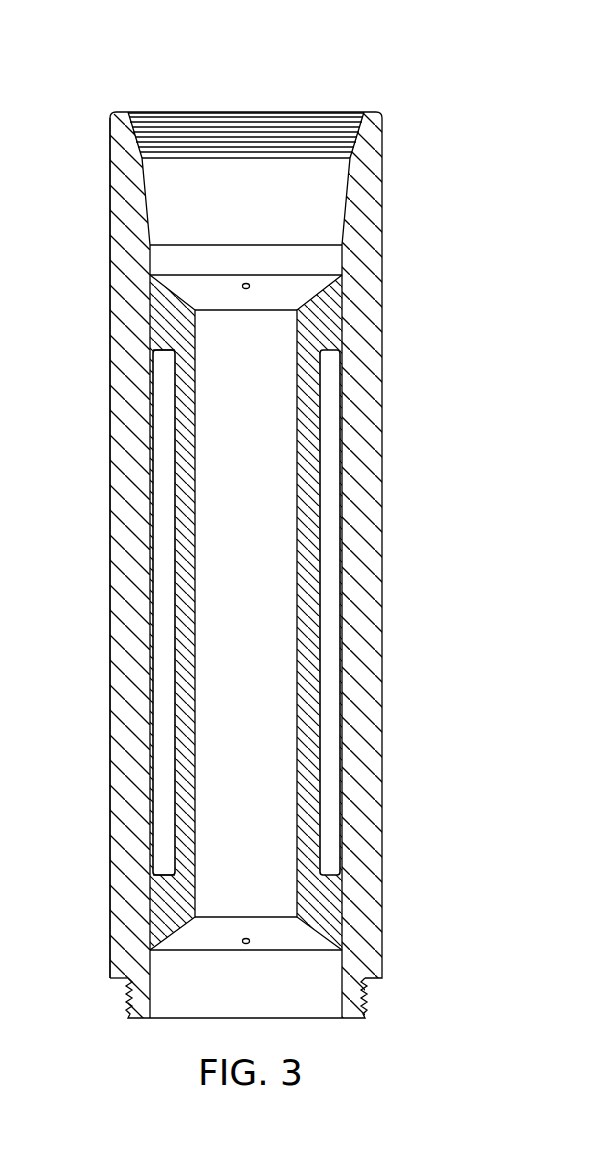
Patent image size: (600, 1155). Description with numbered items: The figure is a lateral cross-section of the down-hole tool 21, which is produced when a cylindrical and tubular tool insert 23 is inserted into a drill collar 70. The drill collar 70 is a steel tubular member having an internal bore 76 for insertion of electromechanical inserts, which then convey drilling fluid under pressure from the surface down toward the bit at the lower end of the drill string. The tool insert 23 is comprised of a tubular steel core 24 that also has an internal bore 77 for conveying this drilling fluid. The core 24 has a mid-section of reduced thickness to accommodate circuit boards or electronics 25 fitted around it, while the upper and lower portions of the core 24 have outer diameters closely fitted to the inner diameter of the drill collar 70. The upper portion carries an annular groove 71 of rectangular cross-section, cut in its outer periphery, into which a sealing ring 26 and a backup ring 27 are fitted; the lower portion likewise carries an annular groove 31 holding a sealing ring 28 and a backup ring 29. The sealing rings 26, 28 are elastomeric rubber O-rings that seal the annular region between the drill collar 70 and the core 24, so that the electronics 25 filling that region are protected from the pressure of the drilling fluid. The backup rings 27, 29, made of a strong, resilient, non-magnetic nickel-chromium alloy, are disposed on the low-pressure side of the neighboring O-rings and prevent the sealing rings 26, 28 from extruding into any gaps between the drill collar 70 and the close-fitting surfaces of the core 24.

The down-hole tool 21 is at (362, 91).
The drill collar 70 is at (365, 435).
The internal bore 76 is at (328, 185).
The tool insert 23 is at (318, 263).
The tubular steel core 24 is at (307, 408).
The circuit boards or electronics 25 is at (327, 498).
The internal bore 77 is at (280, 590).
The sealing ring 26 is at (153, 320).
The backup ring 27 is at (155, 333).
The annular groove 71 is at (158, 327).
The annular groove 31 is at (150, 903).
The backup ring 29 is at (153, 893).
The sealing ring 28 is at (152, 908).